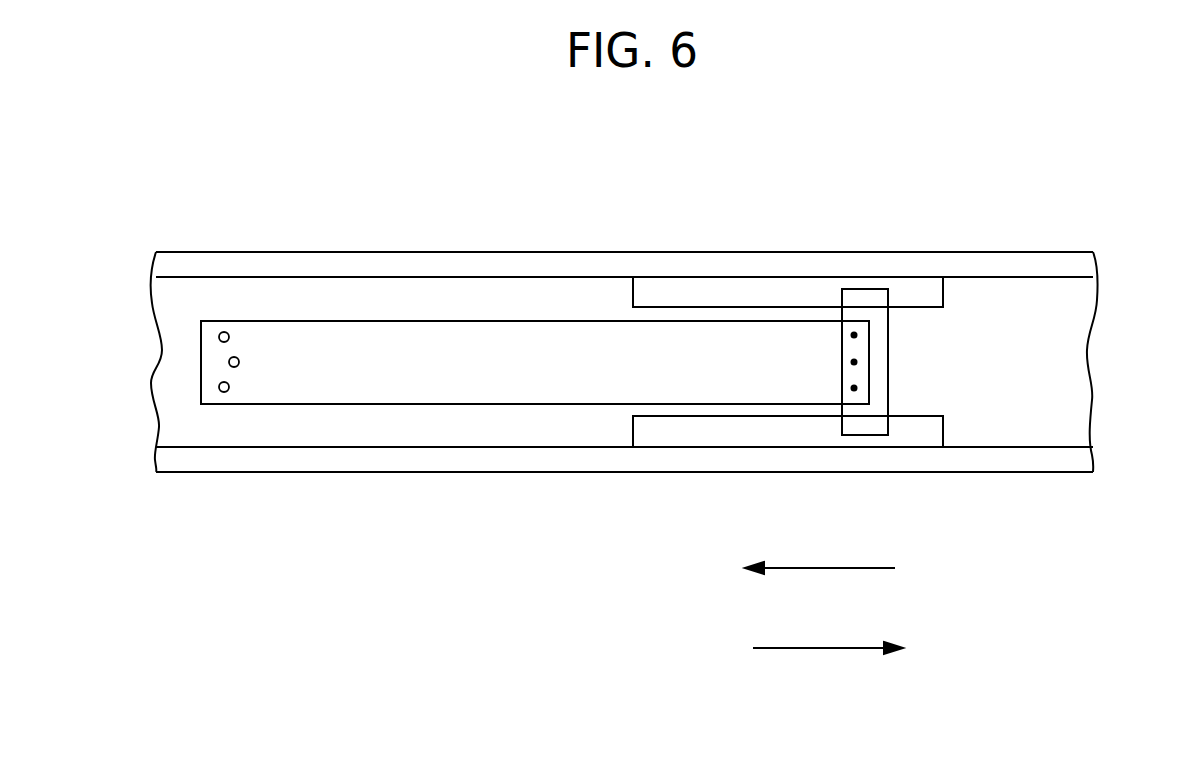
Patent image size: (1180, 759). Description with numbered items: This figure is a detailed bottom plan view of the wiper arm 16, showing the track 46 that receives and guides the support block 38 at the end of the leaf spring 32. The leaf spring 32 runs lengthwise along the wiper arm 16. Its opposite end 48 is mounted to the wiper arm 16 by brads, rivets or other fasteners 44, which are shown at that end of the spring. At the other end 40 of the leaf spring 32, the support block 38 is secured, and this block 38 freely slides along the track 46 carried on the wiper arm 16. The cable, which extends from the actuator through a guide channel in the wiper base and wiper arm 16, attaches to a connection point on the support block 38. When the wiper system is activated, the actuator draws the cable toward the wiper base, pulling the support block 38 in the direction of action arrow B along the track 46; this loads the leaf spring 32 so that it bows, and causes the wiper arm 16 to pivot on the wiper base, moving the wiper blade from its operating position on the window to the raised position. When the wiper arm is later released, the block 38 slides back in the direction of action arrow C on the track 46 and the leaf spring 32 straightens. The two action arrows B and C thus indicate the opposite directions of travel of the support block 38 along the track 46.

The wiper arm 16 is at (218, 458).
The leaf spring 32 is at (472, 357).
The support block 38 is at (866, 295).
The one end of the leaf spring 40 is at (869, 368).
The fasteners 44 is at (228, 362).
The track 46 is at (745, 433).
The opposite end of the leaf spring 48 is at (242, 334).
The action arrow B is at (860, 568).
The action arrow C is at (833, 648).